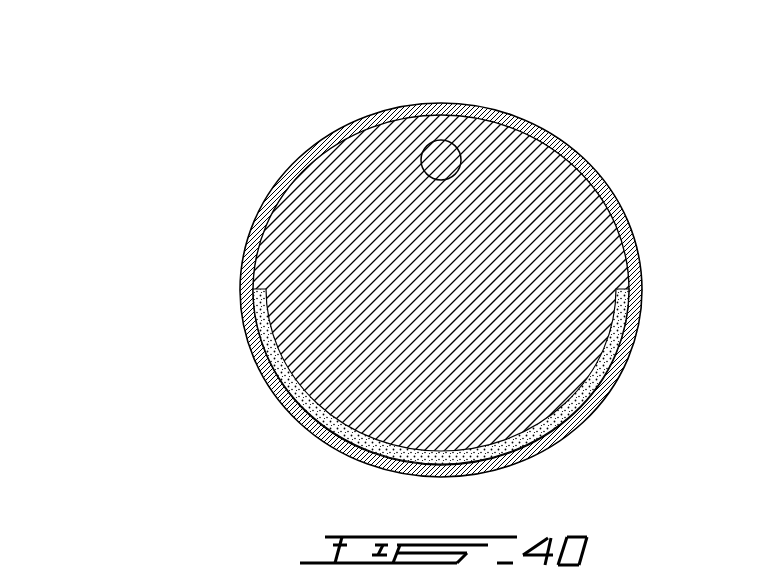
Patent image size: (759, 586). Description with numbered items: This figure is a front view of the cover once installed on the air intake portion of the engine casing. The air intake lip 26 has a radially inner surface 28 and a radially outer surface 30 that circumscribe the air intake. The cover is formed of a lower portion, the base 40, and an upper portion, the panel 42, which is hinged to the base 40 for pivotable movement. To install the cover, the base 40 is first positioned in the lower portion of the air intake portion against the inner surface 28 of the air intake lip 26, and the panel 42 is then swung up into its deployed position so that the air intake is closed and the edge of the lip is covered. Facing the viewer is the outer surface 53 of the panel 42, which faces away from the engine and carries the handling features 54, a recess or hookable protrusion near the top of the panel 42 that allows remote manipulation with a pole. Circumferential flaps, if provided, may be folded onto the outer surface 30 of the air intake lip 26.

The air intake lip 26 is at (345, 96).
The radially inner surface 28 is at (573, 152).
The radially outer surface 30 is at (611, 186).
The base 40 is at (265, 355).
The panel 42 is at (352, 279).
The outer surface 53 is at (456, 258).
The handling features 54 is at (432, 143).